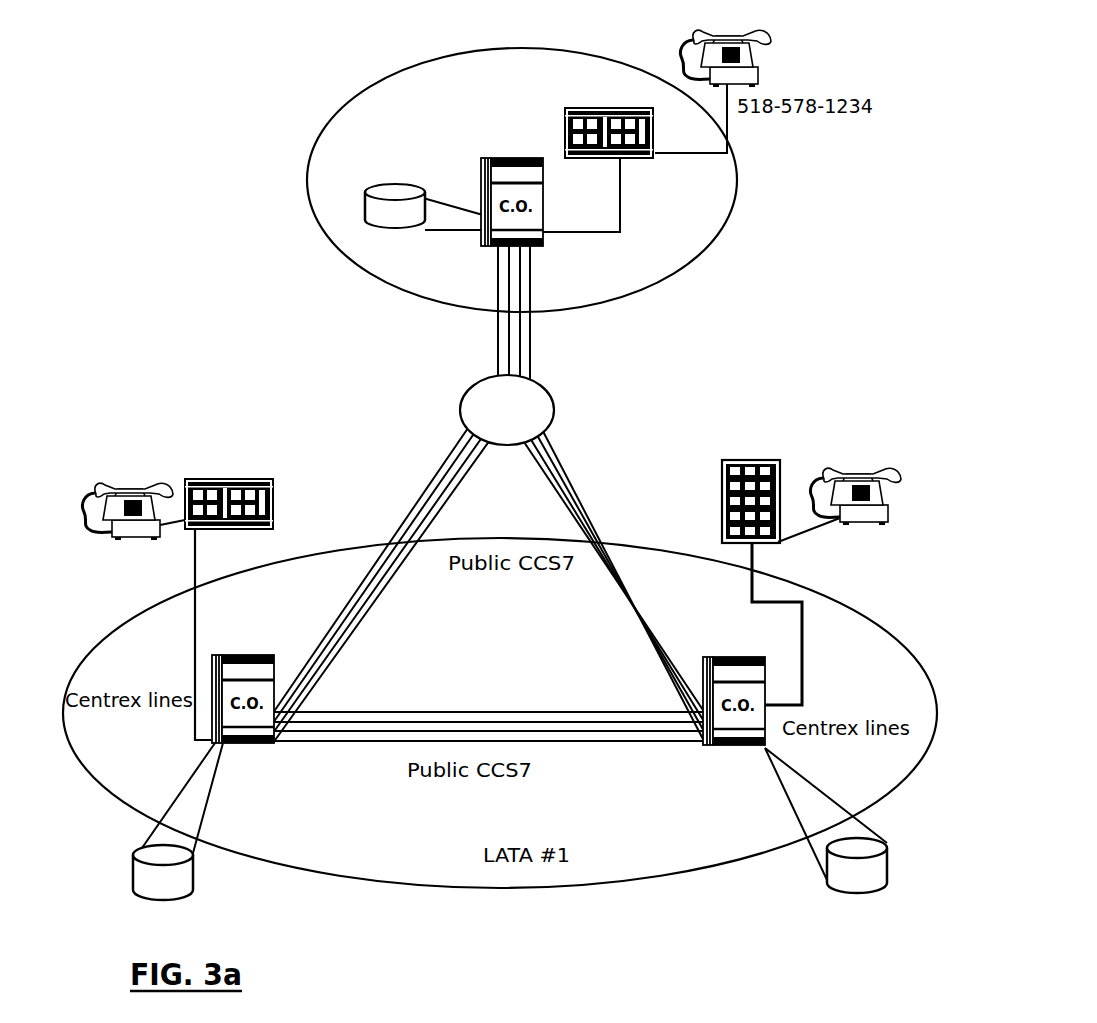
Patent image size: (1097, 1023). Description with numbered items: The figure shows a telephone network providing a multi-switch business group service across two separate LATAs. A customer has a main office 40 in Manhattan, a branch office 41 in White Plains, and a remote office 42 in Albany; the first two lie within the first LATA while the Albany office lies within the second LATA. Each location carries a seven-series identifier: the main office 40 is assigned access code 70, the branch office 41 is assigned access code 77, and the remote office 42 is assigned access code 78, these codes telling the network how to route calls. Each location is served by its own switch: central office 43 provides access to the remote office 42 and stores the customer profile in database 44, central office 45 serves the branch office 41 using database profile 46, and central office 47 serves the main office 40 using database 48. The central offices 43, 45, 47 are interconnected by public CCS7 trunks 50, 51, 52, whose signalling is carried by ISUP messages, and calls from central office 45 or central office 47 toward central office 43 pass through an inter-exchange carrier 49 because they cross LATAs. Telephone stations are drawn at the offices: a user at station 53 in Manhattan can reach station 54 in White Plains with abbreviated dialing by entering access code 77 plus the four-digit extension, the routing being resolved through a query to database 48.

The main office 40 is at (720, 523).
The branch office 41 is at (270, 523).
The remote office 42 is at (645, 162).
The central office 43 is at (482, 195).
The database 44 is at (392, 200).
The central office 45 is at (263, 745).
The database profile 46 is at (140, 873).
The central office 47 is at (755, 752).
The database 48 is at (875, 873).
The inter-exchange carrier 49 is at (489, 494).
The public CCS7 trunk 50 is at (550, 712).
The public CCS7 trunk 51 is at (320, 633).
The public CCS7 trunk 52 is at (662, 640).
The station 53 is at (893, 473).
The station 54 is at (102, 482).
The access code 70 is at (809, 484).
The access code 77 is at (250, 488).
The access code 78 is at (522, 180).